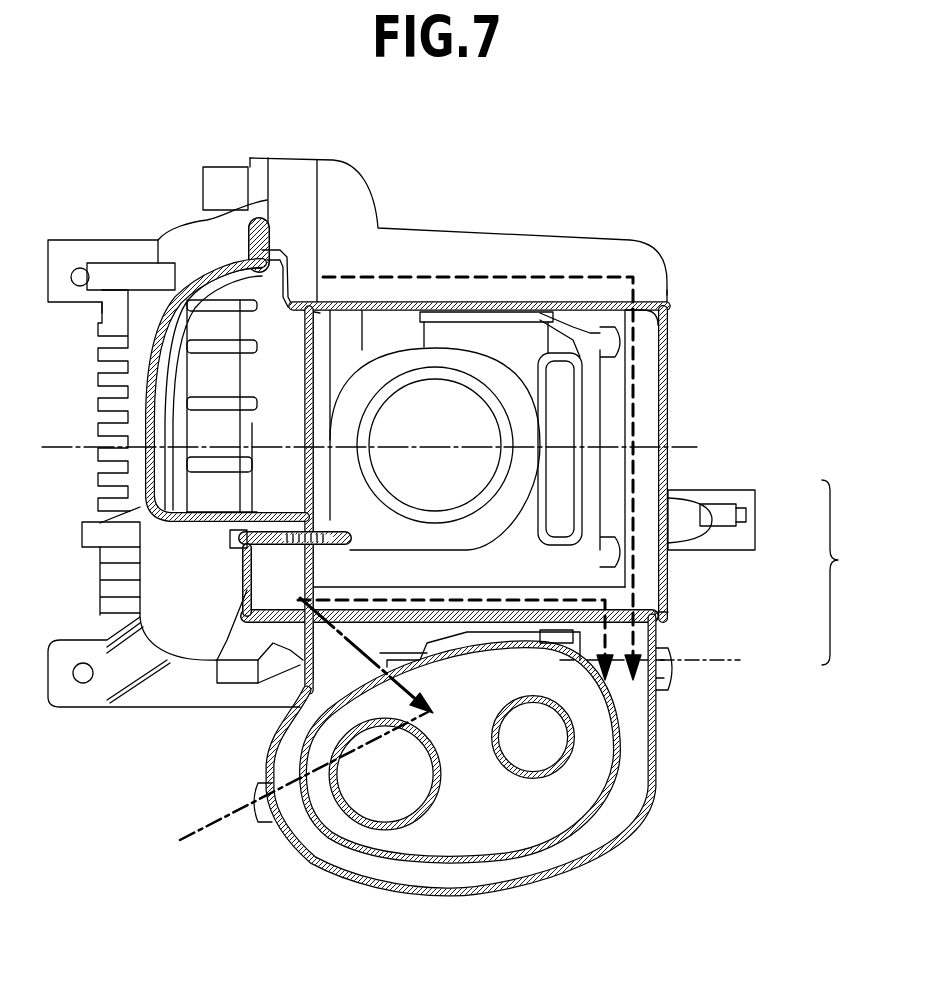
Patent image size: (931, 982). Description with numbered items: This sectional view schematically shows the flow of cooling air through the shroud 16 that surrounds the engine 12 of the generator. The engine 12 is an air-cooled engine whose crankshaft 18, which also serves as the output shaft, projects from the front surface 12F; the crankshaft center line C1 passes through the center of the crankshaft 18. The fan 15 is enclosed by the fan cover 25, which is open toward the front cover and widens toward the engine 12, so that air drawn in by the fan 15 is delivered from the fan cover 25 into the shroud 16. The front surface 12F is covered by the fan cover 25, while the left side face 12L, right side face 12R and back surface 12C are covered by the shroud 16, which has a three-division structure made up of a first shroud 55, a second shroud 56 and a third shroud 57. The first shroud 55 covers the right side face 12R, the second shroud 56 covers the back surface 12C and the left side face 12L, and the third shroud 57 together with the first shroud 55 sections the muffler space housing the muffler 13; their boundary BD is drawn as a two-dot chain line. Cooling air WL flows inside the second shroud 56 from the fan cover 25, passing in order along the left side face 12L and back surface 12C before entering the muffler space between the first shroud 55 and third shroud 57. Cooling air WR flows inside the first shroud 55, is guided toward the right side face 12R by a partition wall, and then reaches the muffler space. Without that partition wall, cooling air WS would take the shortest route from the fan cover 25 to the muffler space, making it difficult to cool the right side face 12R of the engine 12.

The engine 12 is at (560, 267).
The front surface 12F is at (298, 250).
The left side face 12L is at (473, 306).
The back surface 12C is at (600, 428).
The right side face 12R is at (320, 627).
The muffler 13 is at (493, 813).
The fan 15 is at (207, 330).
The shroud 16 is at (768, 572).
The crankshaft 18 is at (267, 423).
The fan cover 25 is at (173, 227).
The first shroud 55 is at (670, 613).
The second shroud 56 is at (673, 292).
The third shroud 57 is at (656, 738).
The crankshaft center line C1 is at (351, 448).
The cooling air WL is at (406, 277).
The cooling air WS is at (358, 592).
The cooling air WR is at (405, 612).
The boundary BD is at (290, 733).